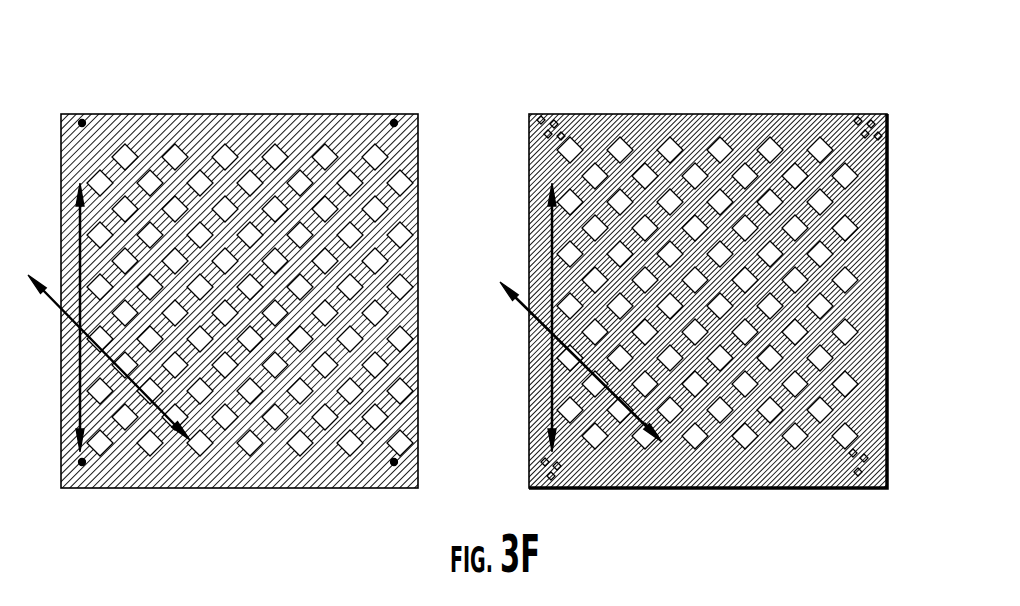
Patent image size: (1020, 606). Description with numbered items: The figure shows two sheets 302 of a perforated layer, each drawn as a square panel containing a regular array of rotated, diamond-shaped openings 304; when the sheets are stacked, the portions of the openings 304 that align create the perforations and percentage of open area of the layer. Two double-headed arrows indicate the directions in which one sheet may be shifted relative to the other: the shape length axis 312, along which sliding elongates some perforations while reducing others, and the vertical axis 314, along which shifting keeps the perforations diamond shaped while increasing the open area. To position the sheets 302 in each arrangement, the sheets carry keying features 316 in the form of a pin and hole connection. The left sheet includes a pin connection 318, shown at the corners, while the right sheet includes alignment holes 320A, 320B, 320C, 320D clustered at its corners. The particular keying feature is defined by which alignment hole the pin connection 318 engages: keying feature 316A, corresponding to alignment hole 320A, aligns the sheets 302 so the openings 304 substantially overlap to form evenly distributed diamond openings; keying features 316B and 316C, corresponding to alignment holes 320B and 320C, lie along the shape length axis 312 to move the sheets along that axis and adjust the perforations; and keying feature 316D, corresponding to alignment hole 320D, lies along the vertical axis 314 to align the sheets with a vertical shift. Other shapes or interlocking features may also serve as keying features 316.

The sheet 302 is at (405, 220).
The openings 304 is at (402, 352).
The shape length axis 312 is at (50, 308).
The vertical axis 314 is at (78, 243).
The keying features 316 is at (98, 87).
The pin connection 318 is at (393, 120).
The keying feature 316A is at (542, 98).
The keying feature 316B is at (561, 104).
The keying feature 316C is at (576, 117).
The keying feature 316D is at (526, 122).
The alignment hole 320A is at (860, 125).
The alignment hole 320B is at (866, 128).
The alignment hole 320C is at (874, 131).
The alignment hole 320D is at (858, 133).